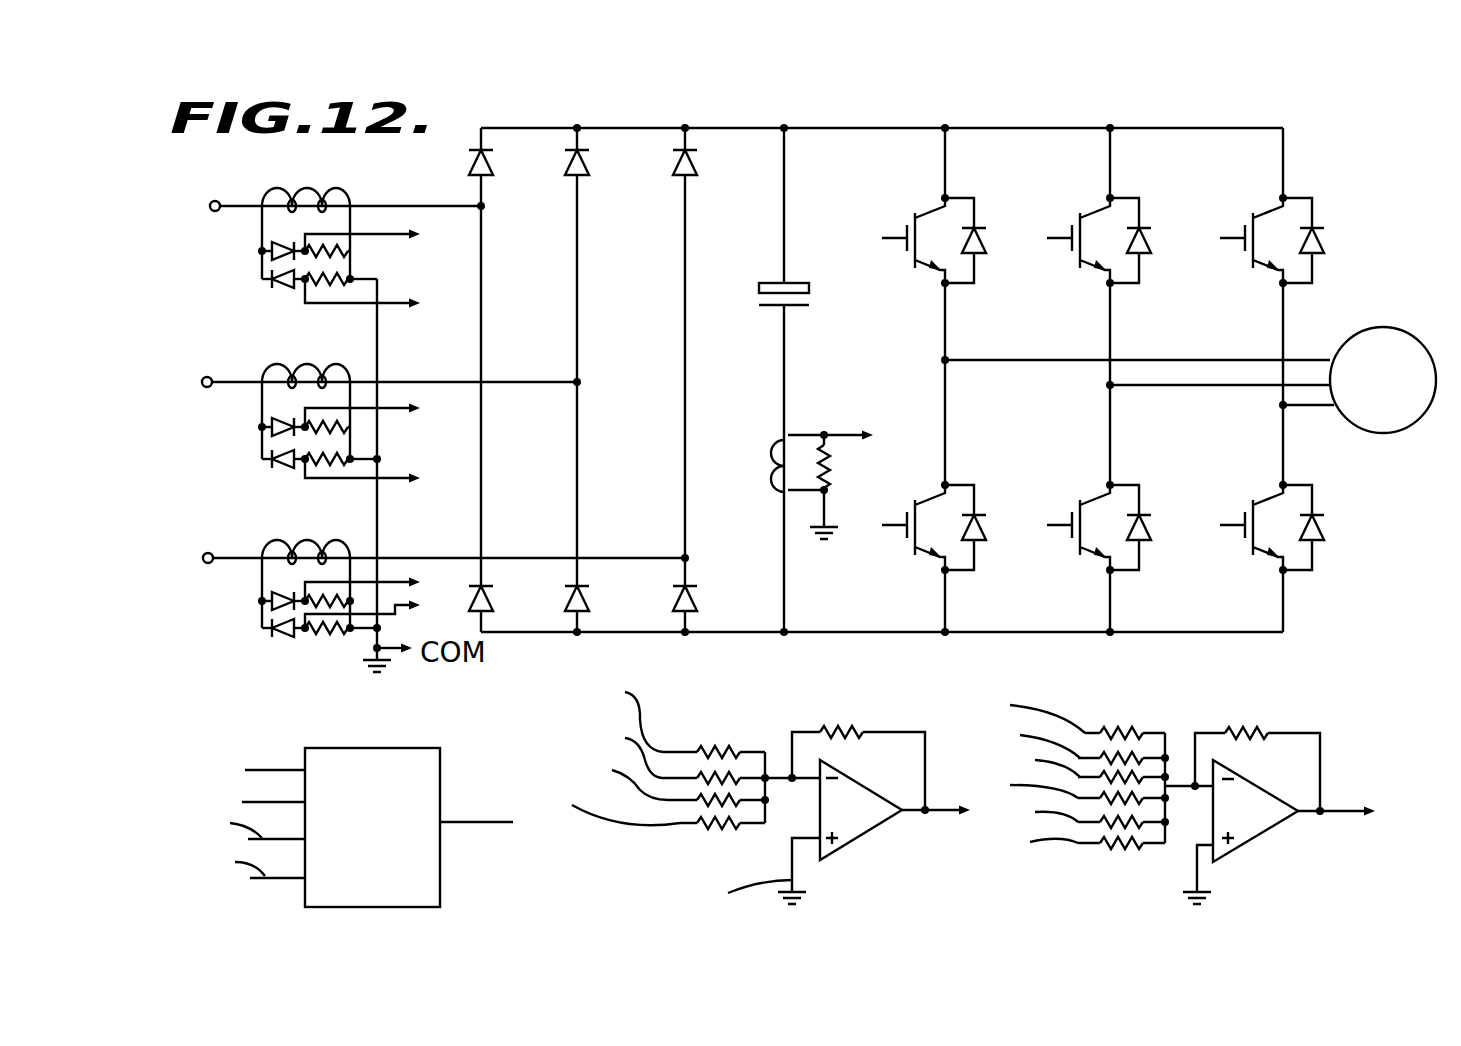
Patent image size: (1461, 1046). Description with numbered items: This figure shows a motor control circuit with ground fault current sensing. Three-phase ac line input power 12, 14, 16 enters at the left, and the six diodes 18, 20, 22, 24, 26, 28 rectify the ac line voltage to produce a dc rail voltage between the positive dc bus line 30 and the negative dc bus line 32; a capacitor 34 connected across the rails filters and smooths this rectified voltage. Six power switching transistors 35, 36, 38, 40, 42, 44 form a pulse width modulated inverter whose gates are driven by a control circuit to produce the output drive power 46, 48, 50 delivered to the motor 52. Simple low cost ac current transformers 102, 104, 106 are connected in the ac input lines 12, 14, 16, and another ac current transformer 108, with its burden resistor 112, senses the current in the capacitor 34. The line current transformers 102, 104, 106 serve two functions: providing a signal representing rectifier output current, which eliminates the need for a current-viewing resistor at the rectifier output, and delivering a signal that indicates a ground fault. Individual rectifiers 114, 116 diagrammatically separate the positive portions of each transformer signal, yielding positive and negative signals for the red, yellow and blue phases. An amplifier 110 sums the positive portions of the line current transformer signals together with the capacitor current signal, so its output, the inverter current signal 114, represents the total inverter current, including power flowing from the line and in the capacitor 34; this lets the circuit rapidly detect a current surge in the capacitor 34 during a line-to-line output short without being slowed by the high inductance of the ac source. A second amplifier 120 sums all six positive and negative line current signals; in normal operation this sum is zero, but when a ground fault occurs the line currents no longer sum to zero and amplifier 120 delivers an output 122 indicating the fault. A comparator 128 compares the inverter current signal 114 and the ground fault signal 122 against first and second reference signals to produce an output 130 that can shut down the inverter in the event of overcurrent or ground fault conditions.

The ac line input power 12 is at (208, 565).
The ac line input power 14 is at (207, 389).
The ac line input power 16 is at (213, 213).
The diode 18 is at (589, 170).
The diode 20 is at (590, 605).
The diode 22 is at (697, 168).
The diode 24 is at (698, 600).
The diode 26 is at (493, 168).
The diode 28 is at (492, 598).
The positive dc bus line 30 is at (866, 127).
The negative dc bus line 32 is at (866, 634).
The capacitor 34 is at (809, 283).
The power switching transistor 35 is at (972, 207).
The power switching transistor 36 is at (958, 548).
The power switching transistor 38 is at (1138, 207).
The power switching transistor 40 is at (1118, 546).
The power switching transistor 42 is at (1305, 222).
The power switching transistor 44 is at (1298, 546).
The output drive power 46 is at (1228, 305).
The output drive power 48 is at (1200, 385).
The output drive power 50 is at (1305, 410).
The motor 52 is at (1401, 431).
The ac current transformer 102 is at (303, 188).
The ac current transformer 104 is at (304, 362).
The ac current transformer 106 is at (302, 540).
The ac current transformer 108 is at (806, 435).
The amplifier 110 is at (815, 825).
The burden resistor 112 is at (848, 435).
The inverter current signal 114 is at (290, 633).
The rectifier 116 is at (275, 607).
The amplifier 120 is at (1240, 846).
The output 122 is at (250, 800).
The comparator 128 is at (440, 862).
The output 130 is at (468, 822).